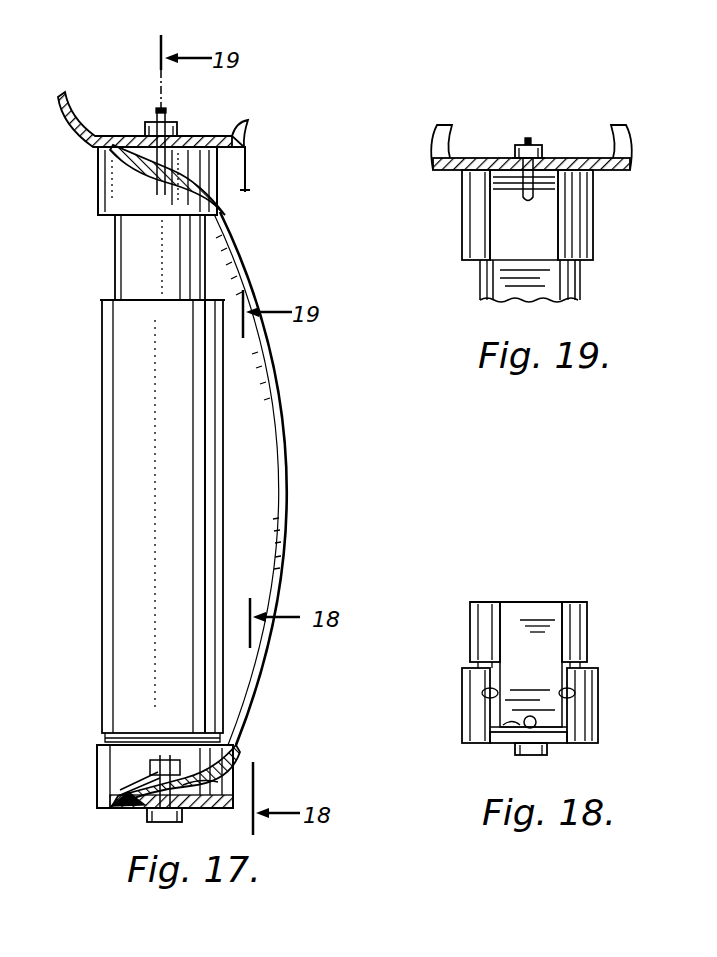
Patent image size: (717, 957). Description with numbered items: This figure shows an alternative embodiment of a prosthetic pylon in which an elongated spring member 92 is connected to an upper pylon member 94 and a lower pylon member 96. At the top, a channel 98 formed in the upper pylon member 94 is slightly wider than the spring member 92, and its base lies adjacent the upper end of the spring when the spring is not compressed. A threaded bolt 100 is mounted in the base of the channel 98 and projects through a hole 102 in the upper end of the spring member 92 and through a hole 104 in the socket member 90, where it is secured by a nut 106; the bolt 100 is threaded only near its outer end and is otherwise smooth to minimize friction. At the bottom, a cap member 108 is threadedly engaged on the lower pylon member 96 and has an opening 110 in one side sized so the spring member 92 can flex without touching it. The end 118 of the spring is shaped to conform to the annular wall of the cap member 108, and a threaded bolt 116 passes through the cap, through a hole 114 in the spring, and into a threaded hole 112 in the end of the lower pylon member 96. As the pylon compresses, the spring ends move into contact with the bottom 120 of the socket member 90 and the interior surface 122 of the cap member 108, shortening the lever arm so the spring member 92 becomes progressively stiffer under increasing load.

In FIG. 17, the socket member 90 is at (68, 97).
In FIG. 19, the socket member 90 is at (627, 146).
In FIG. 17, the elongated spring member 92 is at (290, 418).
In FIG. 19, the elongated spring member 92 is at (505, 262).
In FIG. 18, the elongated spring member 92 is at (505, 627).
In FIG. 17, the upper pylon member 94 is at (116, 256).
In FIG. 19, the upper pylon member 94 is at (580, 281).
In FIG. 17, the lower pylon member 96 is at (110, 437).
In FIG. 18, the lower pylon member 96 is at (588, 628).
In FIG. 17, the channel 98 is at (238, 202).
In FIG. 19, the channel 98 is at (485, 218).
In FIG. 17, the threaded bolt 100 is at (158, 108).
In FIG. 19, the threaded bolt 100 is at (528, 140).
In FIG. 17, the hole 102 is at (226, 172).
In FIG. 19, the hole 102 is at (560, 195).
In FIG. 17, the hole 104 is at (178, 134).
In FIG. 19, the hole 104 is at (512, 156).
In FIG. 17, the nut 106 is at (147, 126).
In FIG. 19, the nut 106 is at (540, 150).
In FIG. 17, the cap member 108 is at (98, 760).
In FIG. 18, the cap member 108 is at (597, 722).
In FIG. 18, the opening 110 is at (482, 693).
In FIG. 17, the threaded hole 112 is at (120, 786).
In FIG. 17, the hole 114 is at (220, 770).
In FIG. 18, the hole 114 is at (548, 745).
In FIG. 17, the threaded bolt 116 is at (170, 822).
In FIG. 18, the threaded bolt 116 is at (532, 756).
In FIG. 17, the end of the spring 118 is at (115, 808).
In FIG. 17, the bottom of the socket 120 is at (246, 158).
In FIG. 17, the interior surface of the cap member 122 is at (225, 787).
In FIG. 18, the interior surface of the cap member 122 is at (497, 745).